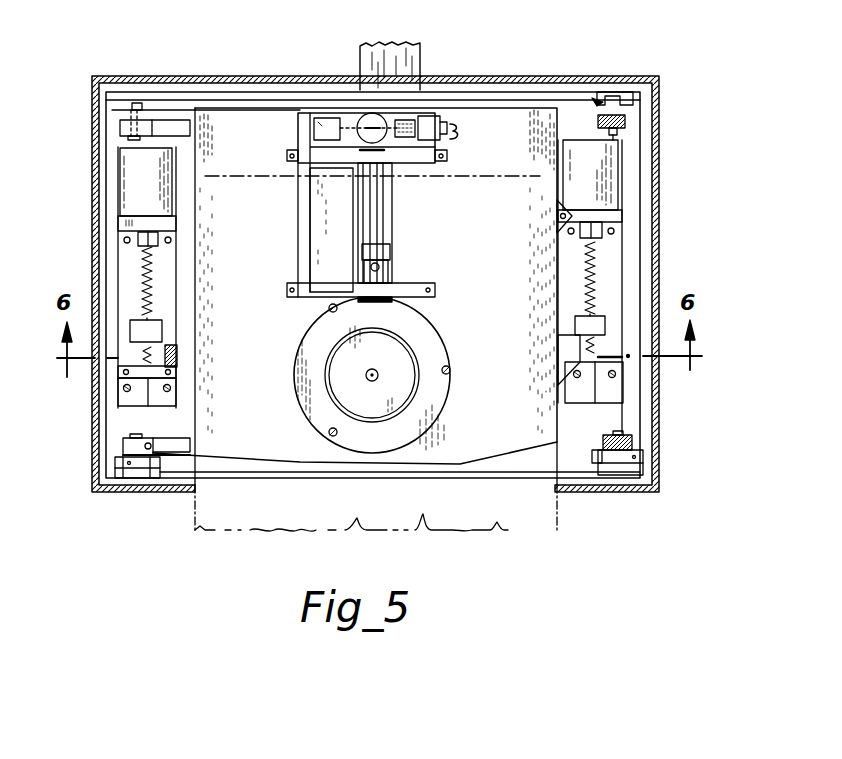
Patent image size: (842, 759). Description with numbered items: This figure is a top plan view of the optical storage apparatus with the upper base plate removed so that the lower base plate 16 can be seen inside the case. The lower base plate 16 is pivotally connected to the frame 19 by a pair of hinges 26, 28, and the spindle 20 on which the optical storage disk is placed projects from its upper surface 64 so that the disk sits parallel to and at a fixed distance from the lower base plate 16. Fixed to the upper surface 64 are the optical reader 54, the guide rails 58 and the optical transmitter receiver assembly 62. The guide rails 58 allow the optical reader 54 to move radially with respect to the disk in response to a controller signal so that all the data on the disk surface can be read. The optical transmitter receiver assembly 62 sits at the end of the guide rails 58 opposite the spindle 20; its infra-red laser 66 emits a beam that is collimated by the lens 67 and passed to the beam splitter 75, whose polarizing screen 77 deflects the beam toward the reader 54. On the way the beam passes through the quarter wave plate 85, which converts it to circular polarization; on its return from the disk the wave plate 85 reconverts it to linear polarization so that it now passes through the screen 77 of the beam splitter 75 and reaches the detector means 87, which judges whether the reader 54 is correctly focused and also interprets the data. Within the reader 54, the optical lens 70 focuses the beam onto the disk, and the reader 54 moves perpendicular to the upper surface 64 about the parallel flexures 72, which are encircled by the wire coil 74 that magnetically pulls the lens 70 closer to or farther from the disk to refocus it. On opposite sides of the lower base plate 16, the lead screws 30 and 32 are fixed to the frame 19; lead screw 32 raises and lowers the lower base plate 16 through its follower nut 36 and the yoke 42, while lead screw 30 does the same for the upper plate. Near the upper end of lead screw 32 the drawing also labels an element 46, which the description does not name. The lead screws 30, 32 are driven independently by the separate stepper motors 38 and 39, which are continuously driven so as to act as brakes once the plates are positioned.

The lower base plate 16 is at (547, 170).
The frame 19 is at (113, 140).
The spindle 20 is at (378, 375).
The hinge 26 is at (152, 437).
The hinge 28 is at (120, 127).
The lead screw 30 is at (150, 293).
The lead screw 32 is at (590, 292).
The follower nut 36 is at (607, 320).
The stepper motor 38 is at (130, 183).
The stepper motor 39 is at (607, 167).
The yoke 42 is at (597, 347).
The clamp 46 is at (553, 172).
The optical reader 54 is at (388, 267).
The guide rails 58 is at (397, 203).
The optical transmitter receiver assembly 62 is at (447, 143).
The upper surface 64 is at (503, 301).
The infra-red laser 66 is at (428, 125).
The lens 67 is at (402, 125).
The optical lens 70 is at (371, 267).
The parallel flexures 72 is at (358, 253).
The wire coil 74 is at (392, 250).
The beam splitter 75 is at (370, 114).
The polarizing screen 77 is at (370, 129).
The quarter wave plate 85 is at (367, 153).
The detector means 87 is at (325, 125).